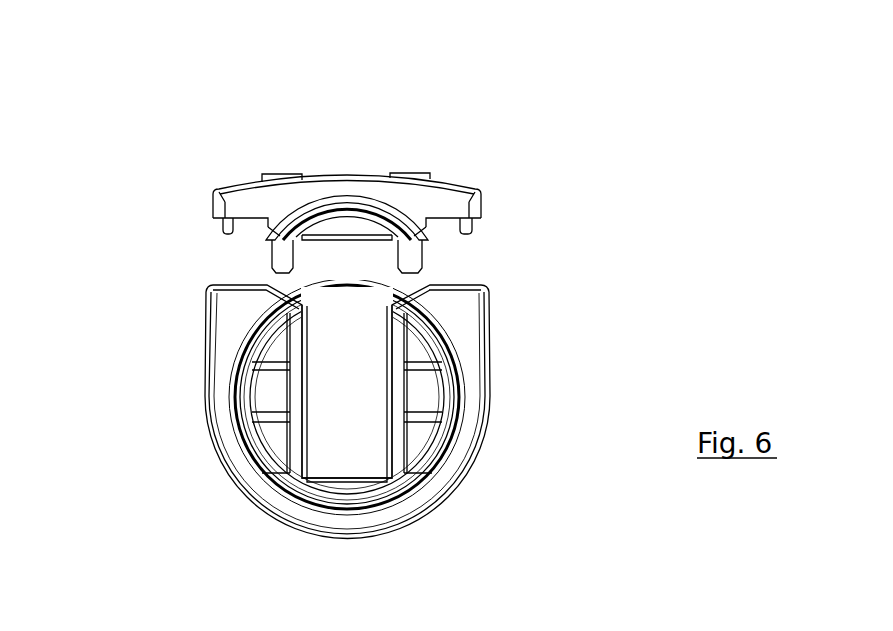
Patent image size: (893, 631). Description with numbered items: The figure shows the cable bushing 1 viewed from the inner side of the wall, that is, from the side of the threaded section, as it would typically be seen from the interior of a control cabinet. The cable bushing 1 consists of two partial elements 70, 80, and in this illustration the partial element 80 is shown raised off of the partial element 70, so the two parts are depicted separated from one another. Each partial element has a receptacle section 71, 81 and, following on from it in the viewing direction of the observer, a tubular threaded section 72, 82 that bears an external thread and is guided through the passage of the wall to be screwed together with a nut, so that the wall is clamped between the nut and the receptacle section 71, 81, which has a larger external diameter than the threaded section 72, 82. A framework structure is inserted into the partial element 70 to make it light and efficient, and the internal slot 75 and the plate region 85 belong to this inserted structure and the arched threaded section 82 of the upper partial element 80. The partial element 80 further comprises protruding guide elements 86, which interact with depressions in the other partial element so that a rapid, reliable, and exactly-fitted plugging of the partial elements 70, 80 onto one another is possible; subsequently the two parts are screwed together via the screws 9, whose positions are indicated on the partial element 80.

The cable bushing 1 is at (152, 134).
The screws 9 is at (272, 173).
The partial element 70 is at (217, 472).
The receptacle section 71 is at (220, 333).
The threaded section 72 is at (450, 430).
The slot 75 is at (345, 447).
The partial element 80 is at (237, 178).
The receptacle section 81 is at (435, 207).
The threaded section 82 is at (345, 212).
The plate 85 is at (353, 238).
The guide elements 86 is at (225, 233).